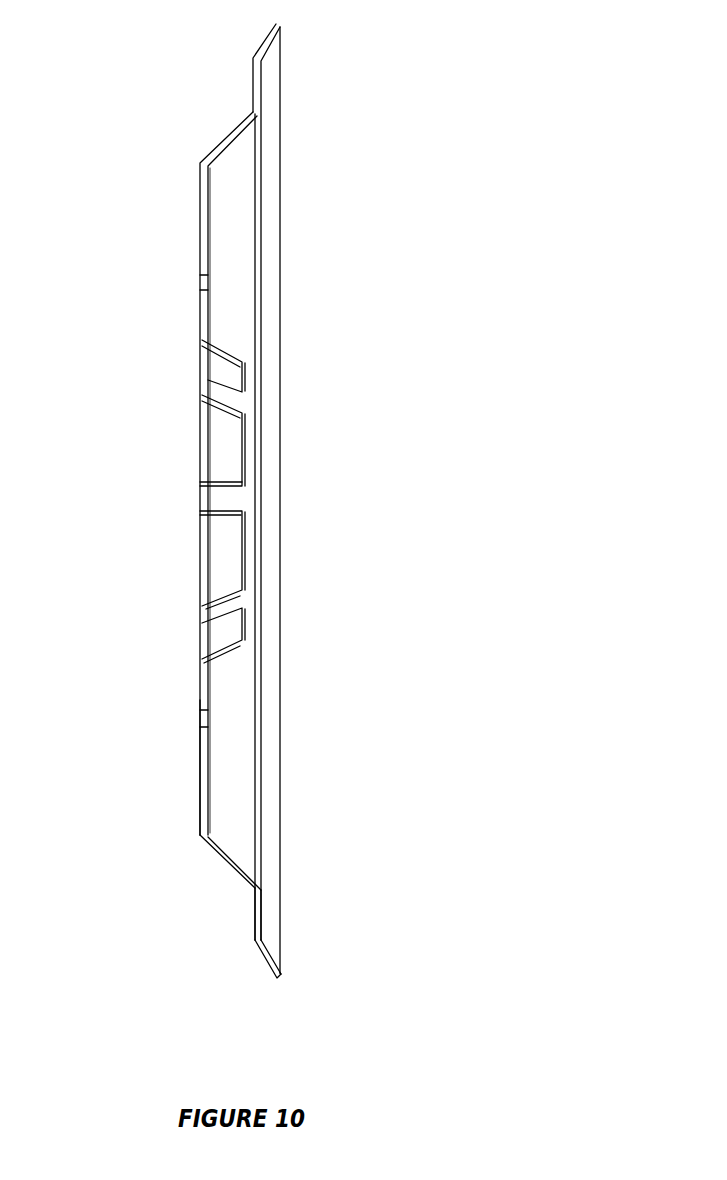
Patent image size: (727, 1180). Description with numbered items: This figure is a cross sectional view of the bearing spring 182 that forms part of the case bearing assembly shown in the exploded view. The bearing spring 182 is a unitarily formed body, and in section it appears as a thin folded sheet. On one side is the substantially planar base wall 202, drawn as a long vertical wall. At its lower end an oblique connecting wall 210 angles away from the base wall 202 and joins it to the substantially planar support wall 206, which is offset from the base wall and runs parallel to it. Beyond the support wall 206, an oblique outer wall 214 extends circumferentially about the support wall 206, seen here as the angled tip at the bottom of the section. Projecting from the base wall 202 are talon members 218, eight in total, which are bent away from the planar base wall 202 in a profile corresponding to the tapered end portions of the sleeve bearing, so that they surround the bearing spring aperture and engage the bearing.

The bearing spring 182 is at (455, 249).
The talon members 218 is at (222, 452).
The base wall 202 is at (200, 746).
The connecting wall 210 is at (223, 862).
The support wall 206 is at (251, 915).
The outer wall 214 is at (266, 962).